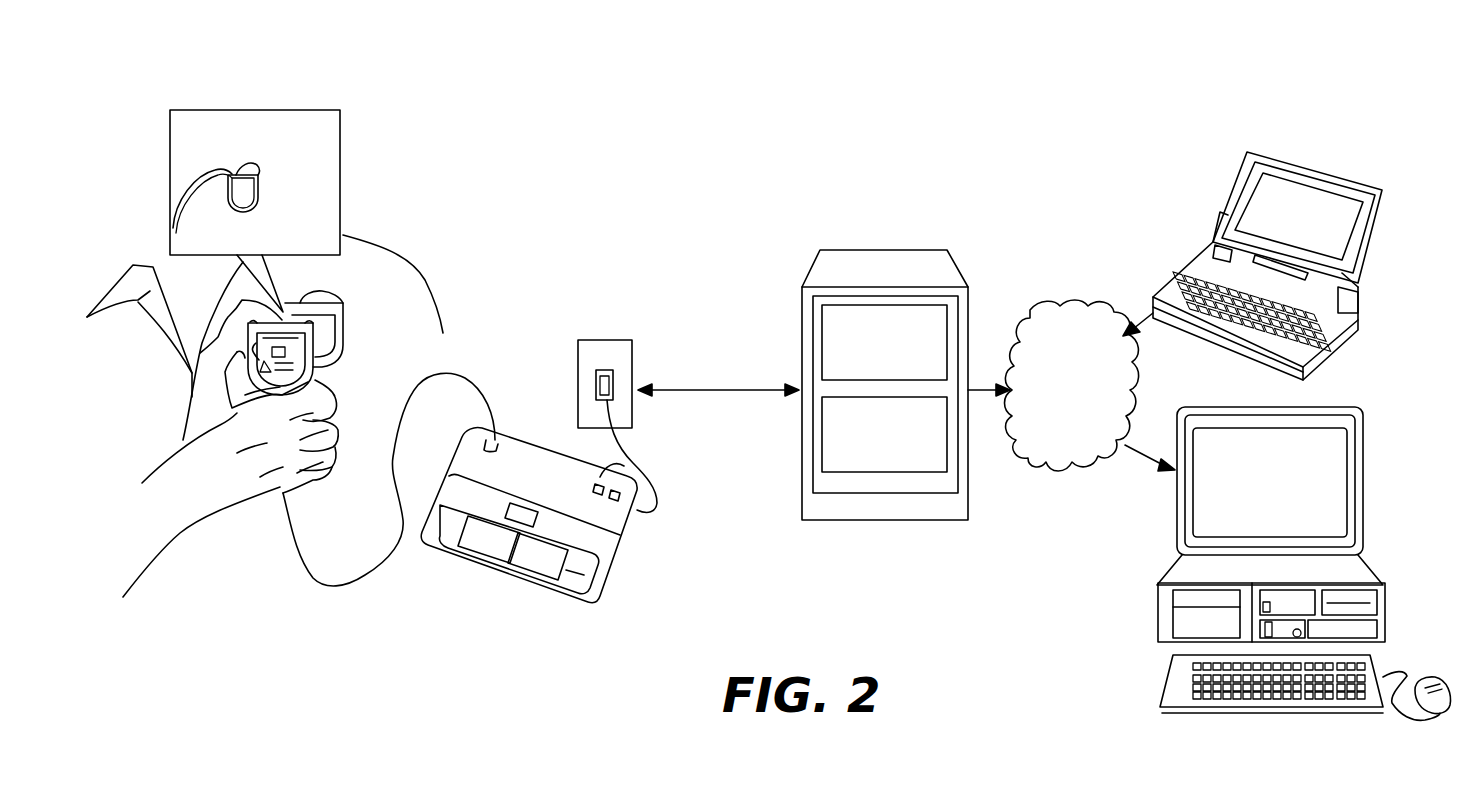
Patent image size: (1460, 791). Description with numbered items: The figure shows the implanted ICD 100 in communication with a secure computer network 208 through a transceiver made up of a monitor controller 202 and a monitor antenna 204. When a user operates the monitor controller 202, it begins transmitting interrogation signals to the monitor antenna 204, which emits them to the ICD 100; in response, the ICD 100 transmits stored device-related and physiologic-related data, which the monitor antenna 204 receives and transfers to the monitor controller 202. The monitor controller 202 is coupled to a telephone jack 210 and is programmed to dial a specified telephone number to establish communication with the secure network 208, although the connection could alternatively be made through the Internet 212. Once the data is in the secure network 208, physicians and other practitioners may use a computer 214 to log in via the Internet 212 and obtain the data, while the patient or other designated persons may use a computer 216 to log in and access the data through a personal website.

The ICD 100 is at (343, 290).
The monitor controller 202 is at (620, 577).
The monitor antenna 204 is at (317, 373).
The secure computer network 208 is at (843, 248).
The telephone jack 210 is at (603, 373).
The Internet 212 is at (1068, 302).
The computer 214 is at (1273, 152).
The computer 216 is at (1363, 513).